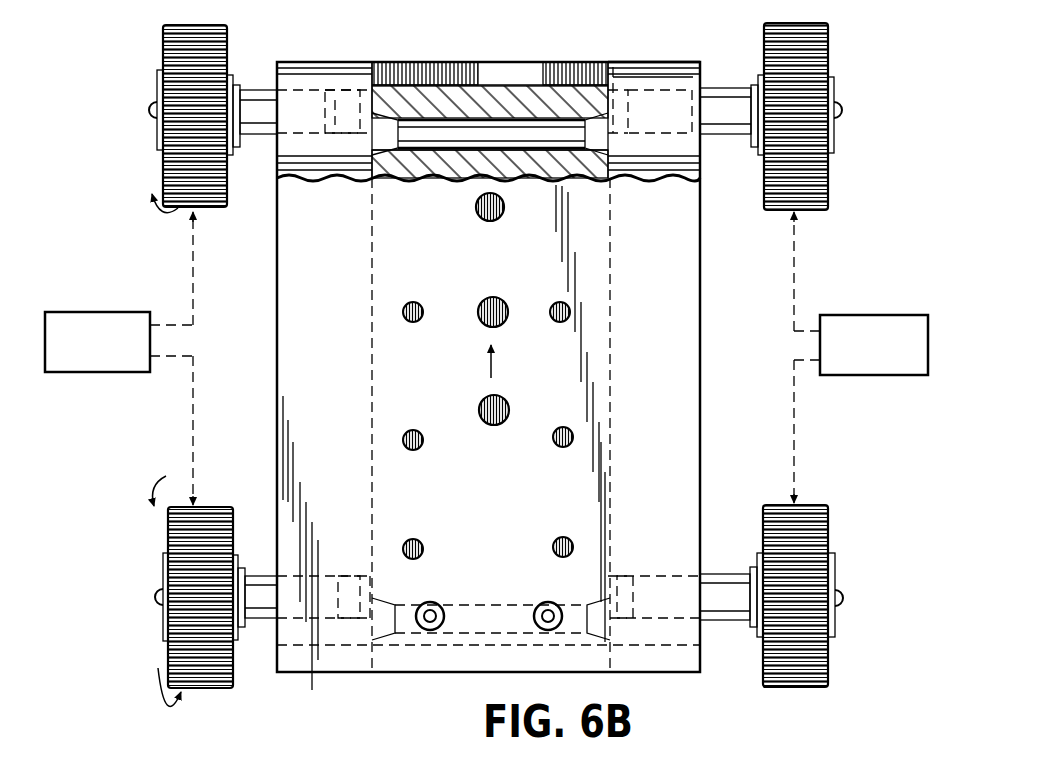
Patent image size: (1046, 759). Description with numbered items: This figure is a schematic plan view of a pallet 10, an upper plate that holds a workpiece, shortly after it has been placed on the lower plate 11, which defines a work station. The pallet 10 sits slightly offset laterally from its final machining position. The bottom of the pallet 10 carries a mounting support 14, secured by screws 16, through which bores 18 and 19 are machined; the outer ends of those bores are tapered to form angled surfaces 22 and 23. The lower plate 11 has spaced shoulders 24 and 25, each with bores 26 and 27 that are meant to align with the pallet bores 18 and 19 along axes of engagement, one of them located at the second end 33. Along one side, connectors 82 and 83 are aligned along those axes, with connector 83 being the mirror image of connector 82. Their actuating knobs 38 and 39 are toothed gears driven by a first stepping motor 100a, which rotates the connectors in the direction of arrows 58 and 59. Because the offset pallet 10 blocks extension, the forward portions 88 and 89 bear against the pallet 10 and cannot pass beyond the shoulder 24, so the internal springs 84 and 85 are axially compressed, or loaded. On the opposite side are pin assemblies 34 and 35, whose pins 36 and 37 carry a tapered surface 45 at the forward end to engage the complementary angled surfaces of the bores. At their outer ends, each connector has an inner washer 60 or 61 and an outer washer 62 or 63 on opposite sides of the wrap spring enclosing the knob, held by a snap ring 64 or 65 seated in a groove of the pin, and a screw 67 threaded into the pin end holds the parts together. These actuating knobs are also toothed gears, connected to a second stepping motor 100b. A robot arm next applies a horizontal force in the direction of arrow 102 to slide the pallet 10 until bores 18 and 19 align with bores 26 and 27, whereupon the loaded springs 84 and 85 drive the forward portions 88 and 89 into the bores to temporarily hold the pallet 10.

The pallet 10 is at (476, 478).
The lower plate 11 is at (482, 60).
The mounting support 14 is at (530, 180).
The screw 16 is at (546, 602).
The bore 18 is at (450, 603).
The bore 19 is at (488, 376).
The angled surfaces 22 is at (605, 650).
The angled surfaces 23 is at (388, 178).
The shoulder 24 is at (305, 180).
The shoulder 25 is at (680, 180).
The bore 26 is at (322, 622).
The bore 27 is at (675, 62).
The second end 33 is at (540, 62).
The pin assembly 34 is at (832, 507).
The pin assembly 35 is at (832, 42).
The pin 36 is at (730, 622).
The pin 37 is at (247, 140).
The actuating knob 38 is at (210, 690).
The actuating knob 39 is at (207, 210).
The tapered surface 45 is at (618, 80).
The directional arrow 58 is at (160, 474).
The directional arrow 59 is at (152, 215).
The inner washer 60 is at (760, 560).
The inner washer 61 is at (232, 75).
The outer washer 62 is at (163, 630).
The outer washer 63 is at (157, 150).
The snap ring 64 is at (240, 632).
The snap ring 65 is at (757, 85).
The screw 67 is at (150, 112).
The connector 82 is at (166, 535).
The connector 83 is at (160, 46).
The spring 84 is at (348, 576).
The spring 85 is at (345, 88).
The forward portion 88 is at (360, 622).
The forward portion 89 is at (358, 95).
The first stepping motor 100a is at (130, 312).
The second stepping motor 100b is at (838, 315).
The directional arrow 102 is at (491, 365).